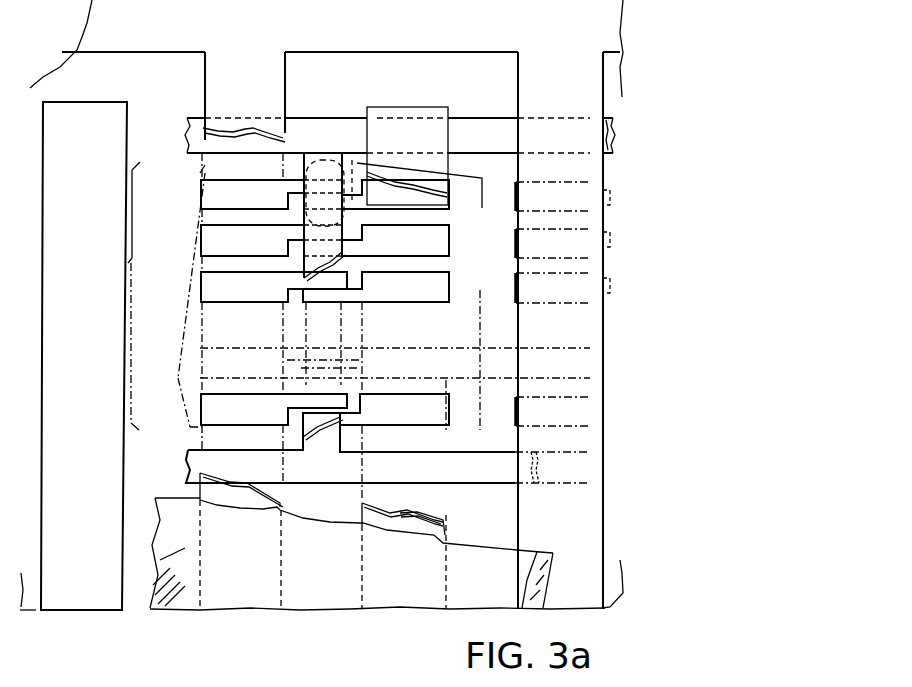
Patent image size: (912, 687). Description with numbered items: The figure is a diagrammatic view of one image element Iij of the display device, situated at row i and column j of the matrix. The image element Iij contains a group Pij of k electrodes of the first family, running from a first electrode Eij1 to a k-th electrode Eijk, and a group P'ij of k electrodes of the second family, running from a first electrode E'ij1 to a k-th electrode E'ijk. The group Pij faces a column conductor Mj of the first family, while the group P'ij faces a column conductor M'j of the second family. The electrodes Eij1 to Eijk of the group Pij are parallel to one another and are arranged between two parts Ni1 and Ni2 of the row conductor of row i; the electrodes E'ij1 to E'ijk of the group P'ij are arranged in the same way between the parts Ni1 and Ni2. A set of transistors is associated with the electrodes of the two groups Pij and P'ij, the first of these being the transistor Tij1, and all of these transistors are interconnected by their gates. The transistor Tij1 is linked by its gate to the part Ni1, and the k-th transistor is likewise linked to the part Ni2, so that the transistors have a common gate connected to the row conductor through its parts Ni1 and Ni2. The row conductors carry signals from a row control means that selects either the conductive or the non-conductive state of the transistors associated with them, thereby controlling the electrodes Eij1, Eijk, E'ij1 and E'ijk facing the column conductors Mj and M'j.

The column conductor of the first family Mj is at (290, 76).
The column conductor of the second family M'j is at (417, 107).
The part of the row conductor Ni1 is at (498, 132).
The part of the row conductor Ni2 is at (428, 468).
The transistor Tij1 is at (328, 163).
The electrode of the first family Eij1 is at (208, 197).
The electrode of the second family E'ij1 is at (403, 241).
The electrode of the first family Eijk is at (223, 404).
The electrode of the second family E'ijk is at (394, 373).
The group of electrodes of the first family Pij is at (178, 378).
The group of electrodes of the second family P'ij is at (468, 436).
The image element Iij is at (132, 258).